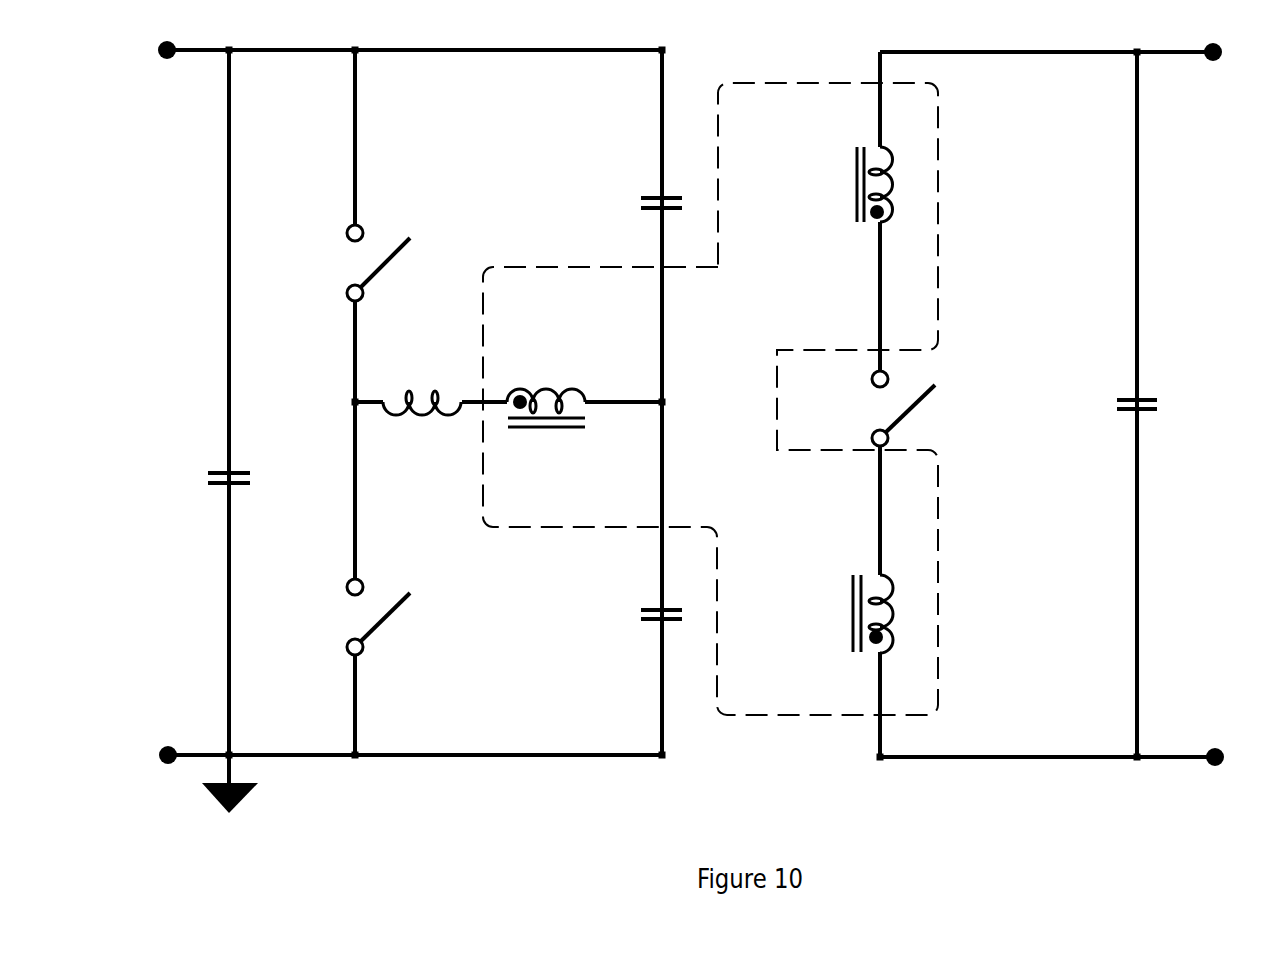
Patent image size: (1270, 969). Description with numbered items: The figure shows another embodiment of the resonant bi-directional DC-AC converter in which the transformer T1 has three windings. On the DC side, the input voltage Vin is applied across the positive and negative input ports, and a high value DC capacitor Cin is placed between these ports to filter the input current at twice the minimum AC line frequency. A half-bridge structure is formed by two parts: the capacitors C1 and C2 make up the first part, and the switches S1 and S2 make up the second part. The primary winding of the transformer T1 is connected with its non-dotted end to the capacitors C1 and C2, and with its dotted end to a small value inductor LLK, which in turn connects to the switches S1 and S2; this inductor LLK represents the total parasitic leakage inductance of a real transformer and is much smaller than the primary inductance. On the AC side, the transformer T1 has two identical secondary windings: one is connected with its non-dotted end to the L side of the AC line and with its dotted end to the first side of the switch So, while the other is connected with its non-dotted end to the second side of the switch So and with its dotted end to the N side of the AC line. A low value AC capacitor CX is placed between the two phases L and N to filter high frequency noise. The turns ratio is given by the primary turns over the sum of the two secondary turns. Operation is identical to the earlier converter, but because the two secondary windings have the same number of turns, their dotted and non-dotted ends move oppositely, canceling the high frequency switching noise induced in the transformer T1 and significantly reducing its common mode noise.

The DC input voltage Vin is at (175, 402).
The DC capacitor Cin is at (196, 506).
The switch S1 is at (344, 263).
The switch S2 is at (342, 617).
The leakage inductor LLK is at (427, 429).
The capacitor C1 is at (614, 205).
The capacitor C2 is at (621, 613).
The transformer T1 is at (710, 426).
The switch So is at (866, 408).
The AC capacitor CX is at (1171, 432).
The L side of the AC line L is at (1196, 77).
The N side of the AC line N is at (1200, 727).